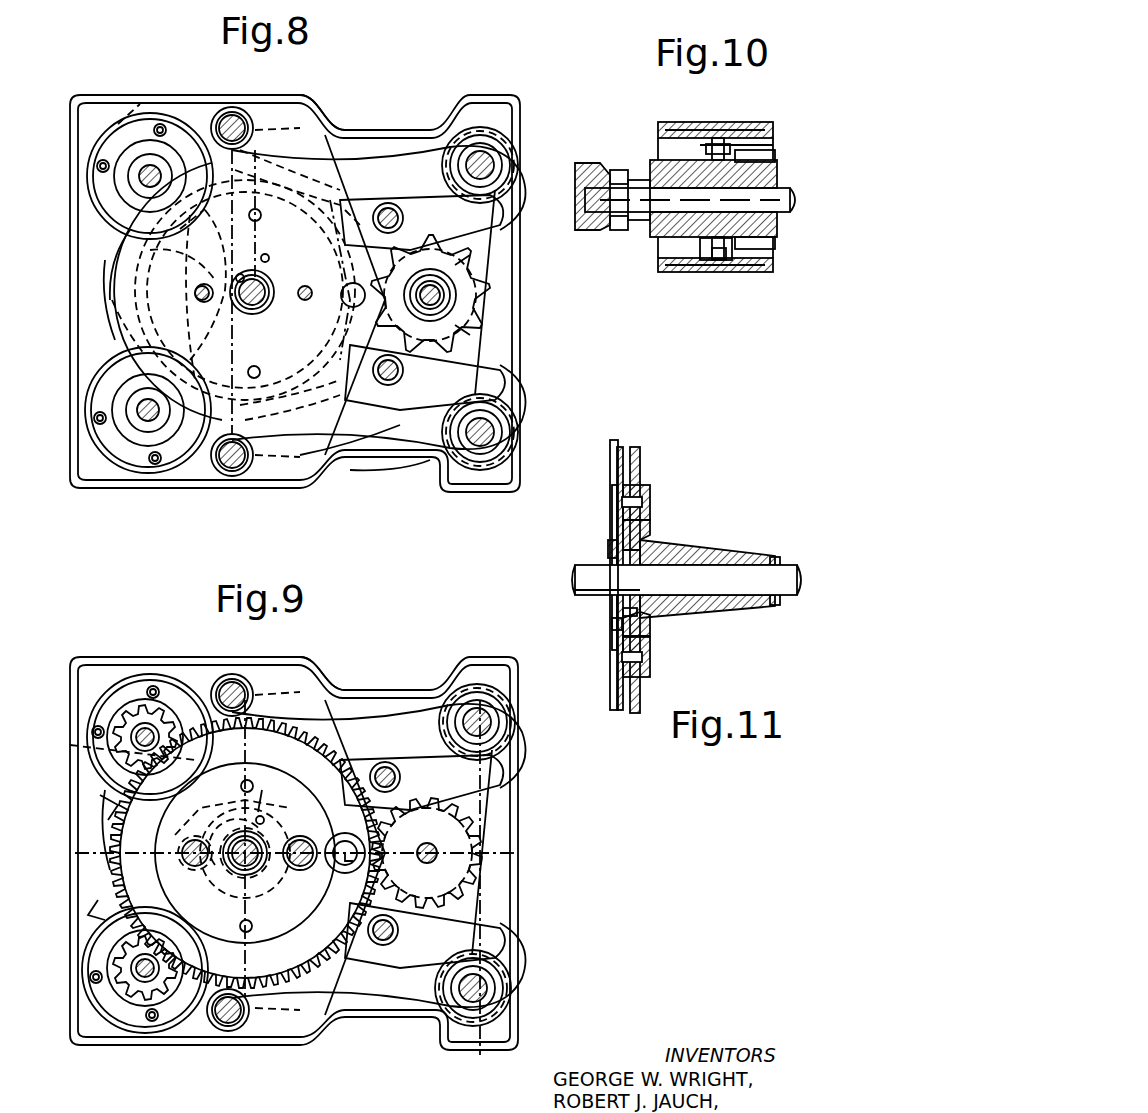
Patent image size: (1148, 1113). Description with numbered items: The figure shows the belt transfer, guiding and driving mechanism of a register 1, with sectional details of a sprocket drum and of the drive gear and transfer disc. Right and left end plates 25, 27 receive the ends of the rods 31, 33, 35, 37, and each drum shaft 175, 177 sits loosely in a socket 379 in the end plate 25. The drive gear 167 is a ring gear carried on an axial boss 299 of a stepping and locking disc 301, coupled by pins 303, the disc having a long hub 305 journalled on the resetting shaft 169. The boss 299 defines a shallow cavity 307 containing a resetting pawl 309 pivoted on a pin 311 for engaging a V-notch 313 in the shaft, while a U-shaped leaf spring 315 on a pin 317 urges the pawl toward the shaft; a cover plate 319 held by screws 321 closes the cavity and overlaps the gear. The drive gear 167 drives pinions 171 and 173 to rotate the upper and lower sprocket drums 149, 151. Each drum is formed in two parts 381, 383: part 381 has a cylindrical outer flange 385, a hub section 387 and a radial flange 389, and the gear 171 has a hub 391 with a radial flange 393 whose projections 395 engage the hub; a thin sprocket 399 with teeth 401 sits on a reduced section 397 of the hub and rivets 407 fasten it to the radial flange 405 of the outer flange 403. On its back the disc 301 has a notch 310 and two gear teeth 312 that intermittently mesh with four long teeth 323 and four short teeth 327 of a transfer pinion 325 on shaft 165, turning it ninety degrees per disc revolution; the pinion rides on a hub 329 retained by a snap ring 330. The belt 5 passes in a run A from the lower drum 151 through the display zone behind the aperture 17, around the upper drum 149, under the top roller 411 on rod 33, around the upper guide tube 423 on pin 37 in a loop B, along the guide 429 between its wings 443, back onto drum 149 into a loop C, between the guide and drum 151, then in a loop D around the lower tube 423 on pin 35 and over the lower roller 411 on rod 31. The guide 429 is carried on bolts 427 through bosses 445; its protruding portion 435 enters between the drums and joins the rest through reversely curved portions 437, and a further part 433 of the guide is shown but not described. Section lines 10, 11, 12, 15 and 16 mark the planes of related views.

In FIG. 8, the register 1 is at (95, 86).
In FIG. 9, the register 1 is at (120, 655).
In FIG. 8, the belt 5 is at (110, 300).
In FIG. 9, the belt 5 is at (108, 812).
In FIG. 9, the section line 10— 10 is at (50, 725).
In FIG. 9, the section line 11— 11 is at (235, 740).
In FIG. 9, the section line 12— 12 is at (360, 875).
In FIG. 9, the section line 15— 15 is at (50, 855).
In FIG. 8, the section line 16— 16 is at (232, 500).
In FIG. 9, the aperture 17 is at (505, 940).
In FIG. 10, the right end plate 25 is at (590, 160).
In FIG. 8, the left end plate 27 is at (330, 105).
In FIG. 9, the left end plate 27 is at (328, 670).
In FIG. 8, the rod 31 is at (225, 470).
In FIG. 9, the rod 31 is at (228, 1032).
In FIG. 8, the rod 33 is at (232, 112).
In FIG. 9, the rod 33 is at (232, 680).
In FIG. 8, the register mounting pin 35 is at (480, 445).
In FIG. 9, the register mounting pin 35 is at (480, 988).
In FIG. 8, the register mounting pin 37 is at (480, 160).
In FIG. 9, the register mounting pin 37 is at (498, 710).
In FIG. 8, the upper sprocket drum 149 is at (108, 150).
In FIG. 10, the upper sprocket drum 149 is at (660, 118).
In FIG. 9, the upper sprocket drum 149 is at (170, 690).
In FIG. 8, the lower sprocket drum 151 is at (98, 430).
In FIG. 9, the lower sprocket drum 151 is at (100, 1005).
In FIG. 8, the shaft 165 is at (436, 300).
In FIG. 11, the drive gear 167 is at (618, 462).
In FIG. 9, the drive gear 167 is at (300, 742).
In FIG. 8, the resetting shaft 169 is at (255, 300).
In FIG. 11, the resetting shaft 169 is at (585, 575).
In FIG. 9, the resetting shaft 169 is at (248, 870).
In FIG. 10, the pinion 171 is at (612, 168).
In FIG. 9, the pinion 171 is at (125, 725).
In FIG. 9, the pinion 173 is at (125, 980).
In FIG. 8, the shaft 175 is at (148, 178).
In FIG. 10, the shaft 175 is at (595, 232).
In FIG. 9, the shaft 175 is at (140, 735).
In FIG. 8, the shaft 177 is at (148, 410).
In FIG. 9, the shaft 177 is at (140, 968).
In FIG. 11, the axial boss 299 is at (616, 522).
In FIG. 8, the stepping and locking disc 301 is at (125, 320).
In FIG. 11, the stepping and locking disc 301 is at (645, 450).
In FIG. 8, the pins 303 is at (258, 210).
In FIG. 11, the pins 303 is at (650, 490).
In FIG. 9, the pins 303 is at (245, 786).
In FIG. 11, the hub 305 is at (740, 552).
In FIG. 11, the circular cavity 307 is at (628, 612).
In FIG. 9, the circular cavity 307 is at (232, 808).
In FIG. 11, the resetting pawl 309 is at (608, 598).
In FIG. 9, the resetting pawl 309 is at (262, 840).
In FIG. 8, the notch 310 is at (360, 265).
In FIG. 8, the pin 311 is at (268, 258).
In FIG. 11, the pin 311 is at (628, 543).
In FIG. 9, the pin 311 is at (271, 795).
In FIG. 8, the gear teeth 312 is at (345, 236).
In FIG. 8, the V-notch 313 is at (265, 290).
In FIG. 11, the V-notch 313 is at (688, 570).
In FIG. 9, the V-notch 313 is at (235, 870).
In FIG. 11, the U-shaped leaf spring 315 is at (612, 628).
In FIG. 9, the U-shaped leaf spring 315 is at (212, 868).
In FIG. 8, the pin 317 is at (238, 278).
In FIG. 9, the pin 317 is at (185, 840).
In FIG. 11, the cover plate 319 is at (612, 648).
In FIG. 9, the cover plate 319 is at (288, 770).
In FIG. 8, the screws 321 is at (200, 296).
In FIG. 11, the screws 321 is at (605, 562).
In FIG. 9, the screws 321 is at (182, 853).
In FIG. 8, the long teeth 323 is at (478, 255).
In FIG. 9, the long teeth 323 is at (478, 810).
In FIG. 8, the transfer pinion 325 is at (478, 310).
In FIG. 9, the transfer pinion 325 is at (480, 822).
In FIG. 8, the short teeth 327 is at (475, 300).
In FIG. 9, the short teeth 327 is at (470, 860).
In FIG. 8, the hub 329 is at (505, 373).
In FIG. 8, the snap ring 330 is at (460, 300).
In FIG. 8, the sockets 379 is at (588, 195).
In FIG. 10, the sockets 379 is at (588, 198).
In FIG. 10, the drum part 381 is at (660, 275).
In FIG. 10, the drum part 383 is at (745, 270).
In FIG. 10, the cylindrical outer flange 385 is at (688, 125).
In FIG. 10, the hub section 387 is at (740, 170).
In FIG. 10, the radial flange 389 is at (692, 262).
In FIG. 10, the hub 391 is at (640, 182).
In FIG. 10, the radial flange 393 is at (640, 222).
In FIG. 10, the teeth 395 is at (648, 228).
In FIG. 10, the hub section 397 is at (735, 243).
In FIG. 10, the sprocket 399 is at (718, 262).
In FIG. 10, the sprocket teeth 401 is at (718, 125).
In FIG. 9, the sprocket teeth 401 is at (108, 805).
In FIG. 10, the outer cylindrical flange 403 is at (745, 125).
In FIG. 10, the radial flange 405 is at (727, 148).
In FIG. 10, the rivets 407 is at (730, 152).
In FIG. 8, the roller 411 is at (262, 150).
In FIG. 9, the roller 411 is at (255, 695).
In FIG. 8, the belt guide tube 423 is at (500, 150).
In FIG. 9, the belt guide tube 423 is at (500, 722).
In FIG. 8, the bolts 427 is at (388, 205).
In FIG. 9, the bolts 427 is at (385, 762).
In FIG. 8, the belt guide means 429 is at (505, 380).
In FIG. 9, the belt guide means 429 is at (505, 778).
In FIG. 8, the stop 433 is at (365, 425).
In FIG. 8, the protruding portion 435 is at (120, 330).
In FIG. 8, the reversely curved portions 437 is at (222, 222).
In FIG. 8, the vertical wings 443 is at (500, 215).
In FIG. 9, the vertical wings 443 is at (495, 775).
In FIG. 8, the bosses 445 is at (380, 210).
In FIG. 9, the bosses 445 is at (390, 765).
In FIG. 8, the run A is at (78, 274).
In FIG. 8, the loop B is at (512, 168).
In FIG. 8, the loop C is at (105, 270).
In FIG. 8, the loop D is at (512, 455).